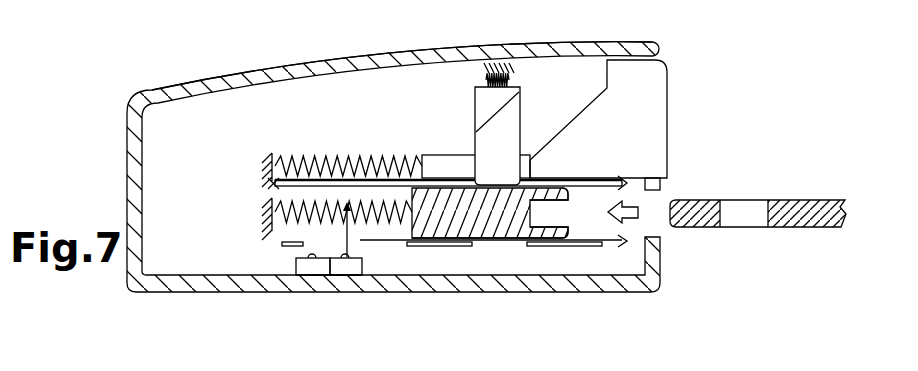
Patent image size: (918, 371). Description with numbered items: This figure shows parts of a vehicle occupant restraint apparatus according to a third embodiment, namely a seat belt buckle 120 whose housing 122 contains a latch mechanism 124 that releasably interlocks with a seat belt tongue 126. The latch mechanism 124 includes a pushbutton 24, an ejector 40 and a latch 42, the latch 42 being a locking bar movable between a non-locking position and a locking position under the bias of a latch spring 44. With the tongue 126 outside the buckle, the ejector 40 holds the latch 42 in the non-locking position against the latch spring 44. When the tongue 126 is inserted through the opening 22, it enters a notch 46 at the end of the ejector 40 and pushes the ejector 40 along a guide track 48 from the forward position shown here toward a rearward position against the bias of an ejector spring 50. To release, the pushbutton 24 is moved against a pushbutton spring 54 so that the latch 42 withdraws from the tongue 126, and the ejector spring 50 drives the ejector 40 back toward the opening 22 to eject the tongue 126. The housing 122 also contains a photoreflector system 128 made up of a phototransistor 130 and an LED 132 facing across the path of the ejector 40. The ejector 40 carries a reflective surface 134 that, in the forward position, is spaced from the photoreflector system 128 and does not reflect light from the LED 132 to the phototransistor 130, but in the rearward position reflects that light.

The seat belt buckle 120 is at (126, 74).
The housing 122 is at (302, 70).
The latch mechanism 124 is at (232, 147).
The pushbutton spring 54 is at (275, 165).
The ejector spring 50 is at (281, 228).
The latch spring 44 is at (490, 82).
The latch 42 is at (503, 100).
The pushbutton 24 is at (668, 118).
The opening 22 is at (676, 183).
The seat belt tongue 126 is at (803, 210).
The ejector 40 is at (457, 218).
The reflective surface 134 is at (417, 237).
The guide track 48 is at (578, 238).
The notch 46 is at (576, 217).
The phototransistor 130 is at (310, 265).
The LED 132 is at (347, 272).
The photoreflector system 128 is at (321, 296).